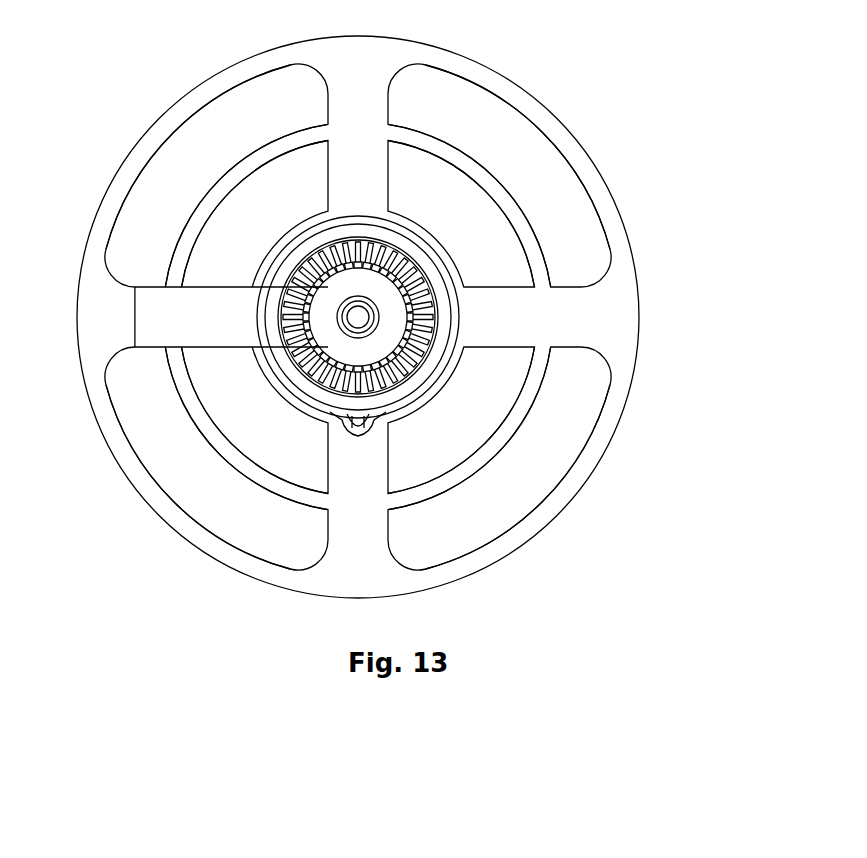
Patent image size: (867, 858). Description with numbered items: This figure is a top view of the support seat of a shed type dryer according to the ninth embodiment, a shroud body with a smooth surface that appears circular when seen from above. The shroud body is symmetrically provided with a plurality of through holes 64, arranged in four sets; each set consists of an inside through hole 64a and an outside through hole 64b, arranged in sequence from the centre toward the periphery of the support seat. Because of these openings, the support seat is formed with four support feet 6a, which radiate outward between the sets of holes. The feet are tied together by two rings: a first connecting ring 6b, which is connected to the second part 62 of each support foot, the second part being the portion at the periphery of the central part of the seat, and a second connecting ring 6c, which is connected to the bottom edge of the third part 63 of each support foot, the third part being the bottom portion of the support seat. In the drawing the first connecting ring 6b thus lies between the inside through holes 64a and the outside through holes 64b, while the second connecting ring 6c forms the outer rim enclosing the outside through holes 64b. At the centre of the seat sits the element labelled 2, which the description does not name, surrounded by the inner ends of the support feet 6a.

The motor 2 is at (298, 255).
The through holes 64 is at (257, 95).
The outside through hole 64b is at (500, 122).
The inside through hole 64a is at (495, 242).
The third part 63 is at (608, 368).
The second part 62 is at (515, 340).
The support feet 6a is at (108, 330).
The first connecting ring 6b is at (182, 260).
The second connecting ring 6c is at (129, 185).